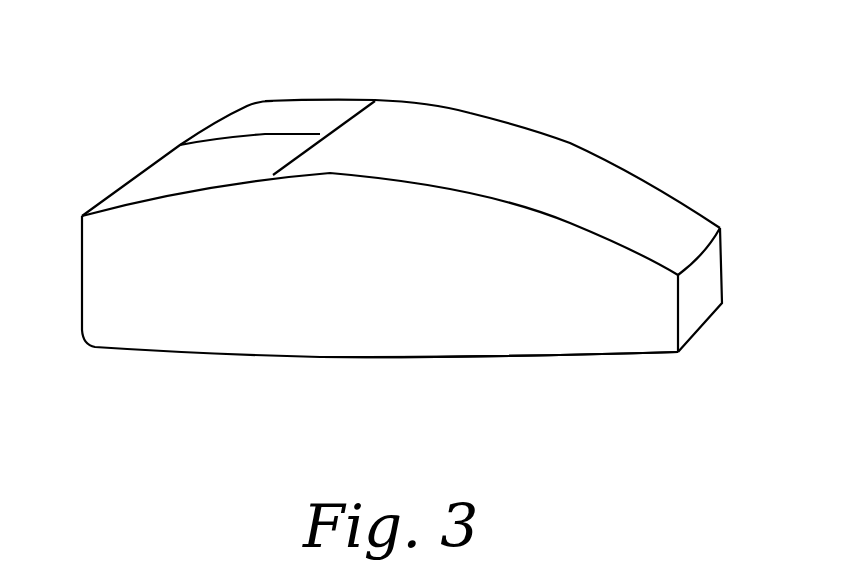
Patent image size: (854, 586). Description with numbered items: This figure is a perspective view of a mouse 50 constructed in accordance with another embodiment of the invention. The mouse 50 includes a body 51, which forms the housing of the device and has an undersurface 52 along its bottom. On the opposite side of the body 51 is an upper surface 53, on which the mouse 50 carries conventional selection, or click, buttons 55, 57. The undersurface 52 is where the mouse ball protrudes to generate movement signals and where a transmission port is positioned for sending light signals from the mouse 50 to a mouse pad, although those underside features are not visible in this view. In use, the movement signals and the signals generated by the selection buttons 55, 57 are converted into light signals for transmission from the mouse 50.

The mouse 50 is at (612, 85).
The body 51 is at (660, 207).
The undersurface 52 is at (517, 356).
The upper surface 53 is at (403, 128).
The selection button 55 is at (152, 181).
The selection button 57 is at (262, 117).